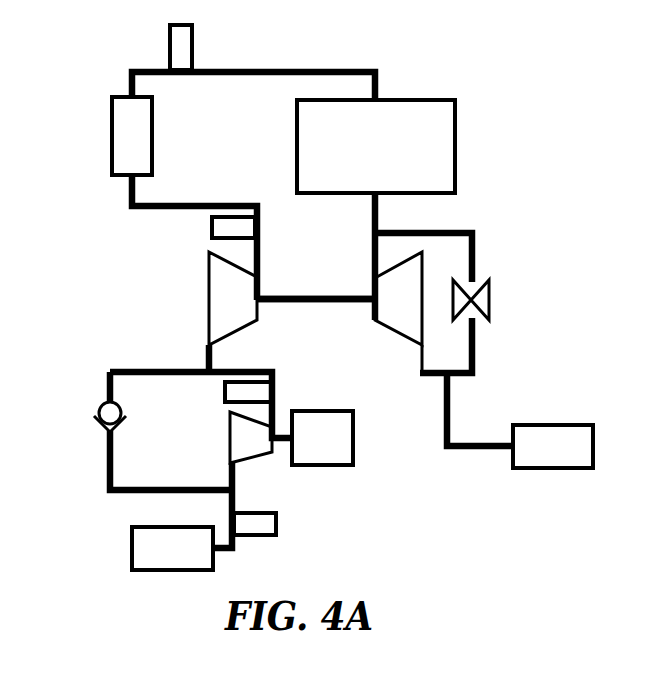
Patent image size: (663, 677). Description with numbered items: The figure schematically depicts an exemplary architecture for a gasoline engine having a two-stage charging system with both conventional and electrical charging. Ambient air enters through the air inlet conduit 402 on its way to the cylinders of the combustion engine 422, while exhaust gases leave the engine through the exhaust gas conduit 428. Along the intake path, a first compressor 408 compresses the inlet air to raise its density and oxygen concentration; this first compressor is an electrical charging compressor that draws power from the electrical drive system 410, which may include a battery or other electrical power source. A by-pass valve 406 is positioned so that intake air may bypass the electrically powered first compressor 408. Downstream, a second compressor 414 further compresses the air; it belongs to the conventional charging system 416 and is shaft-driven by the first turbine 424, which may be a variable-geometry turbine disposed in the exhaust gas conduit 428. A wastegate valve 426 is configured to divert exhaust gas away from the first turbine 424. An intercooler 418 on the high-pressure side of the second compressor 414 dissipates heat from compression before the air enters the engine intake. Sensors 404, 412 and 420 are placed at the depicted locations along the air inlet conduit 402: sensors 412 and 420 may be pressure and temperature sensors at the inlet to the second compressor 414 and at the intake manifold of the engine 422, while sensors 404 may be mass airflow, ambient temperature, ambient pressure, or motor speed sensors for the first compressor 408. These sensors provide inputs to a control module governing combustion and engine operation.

The air inlet conduit 402 is at (132, 538).
The sensor 404 is at (279, 524).
The by-pass valve 406 is at (97, 412).
The first compressor 408 is at (230, 437).
The electrical drive system 410 is at (322, 410).
The sensor 412 is at (248, 380).
The second compressor 414 is at (209, 308).
The conventional charging system 416 is at (317, 297).
The intercooler 418 is at (112, 135).
The sensor 420 is at (170, 50).
The combustion engine 422 is at (398, 99).
The first turbine 424 is at (405, 343).
The wastegate valve 426 is at (478, 282).
The exhaust gas conduit 428 is at (548, 424).